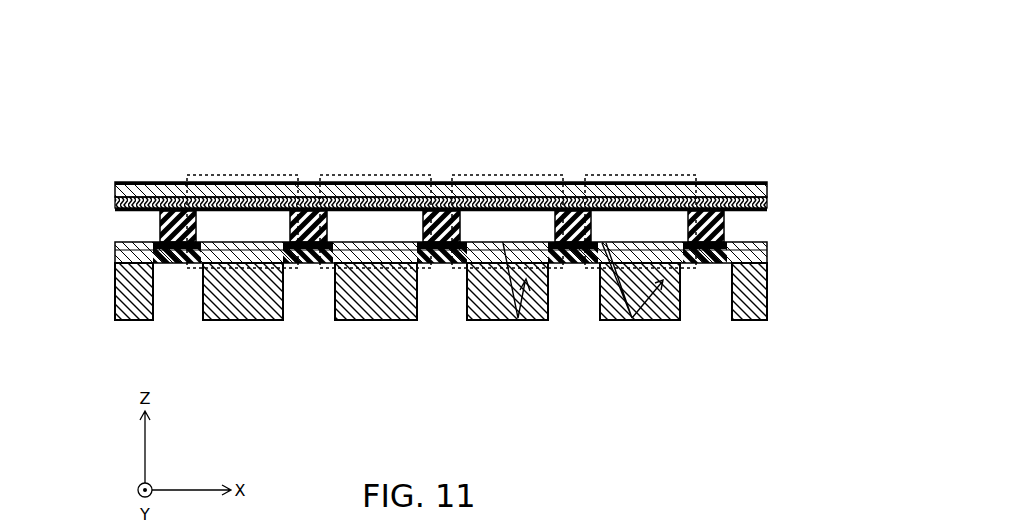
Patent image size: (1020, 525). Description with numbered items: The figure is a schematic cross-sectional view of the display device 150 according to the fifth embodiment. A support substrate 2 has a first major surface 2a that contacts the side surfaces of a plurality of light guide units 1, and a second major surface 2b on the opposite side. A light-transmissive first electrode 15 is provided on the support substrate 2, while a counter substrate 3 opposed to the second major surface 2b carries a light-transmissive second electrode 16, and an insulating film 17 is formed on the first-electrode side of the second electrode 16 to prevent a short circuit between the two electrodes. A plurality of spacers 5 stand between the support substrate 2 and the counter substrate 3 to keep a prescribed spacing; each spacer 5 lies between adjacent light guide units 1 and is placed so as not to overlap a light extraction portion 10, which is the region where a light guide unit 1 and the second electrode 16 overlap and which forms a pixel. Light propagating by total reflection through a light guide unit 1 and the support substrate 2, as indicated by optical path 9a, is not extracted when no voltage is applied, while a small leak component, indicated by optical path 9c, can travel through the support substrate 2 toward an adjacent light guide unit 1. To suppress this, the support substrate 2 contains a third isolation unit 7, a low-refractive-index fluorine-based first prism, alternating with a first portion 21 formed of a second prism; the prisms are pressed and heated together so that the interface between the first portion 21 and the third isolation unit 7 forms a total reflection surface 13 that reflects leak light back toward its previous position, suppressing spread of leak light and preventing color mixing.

The display device 150 is at (677, 86).
The light guide unit 1 is at (245, 305).
The support substrate 2 is at (120, 256).
The first major surface 2a is at (750, 300).
The second major surface 2b is at (750, 242).
The counter substrate 3 is at (143, 182).
The spacer 5 is at (307, 212).
The third isolation unit 7 is at (176, 264).
The optical path 9a is at (528, 321).
The optical path 9c is at (645, 321).
The light extraction portion 10 is at (238, 175).
The total reflection surface 13 is at (140, 268).
The first electrode 15 is at (120, 246).
The second electrode 16 is at (120, 190).
The insulating film 17 is at (120, 204).
The first portion 21 is at (527, 247).